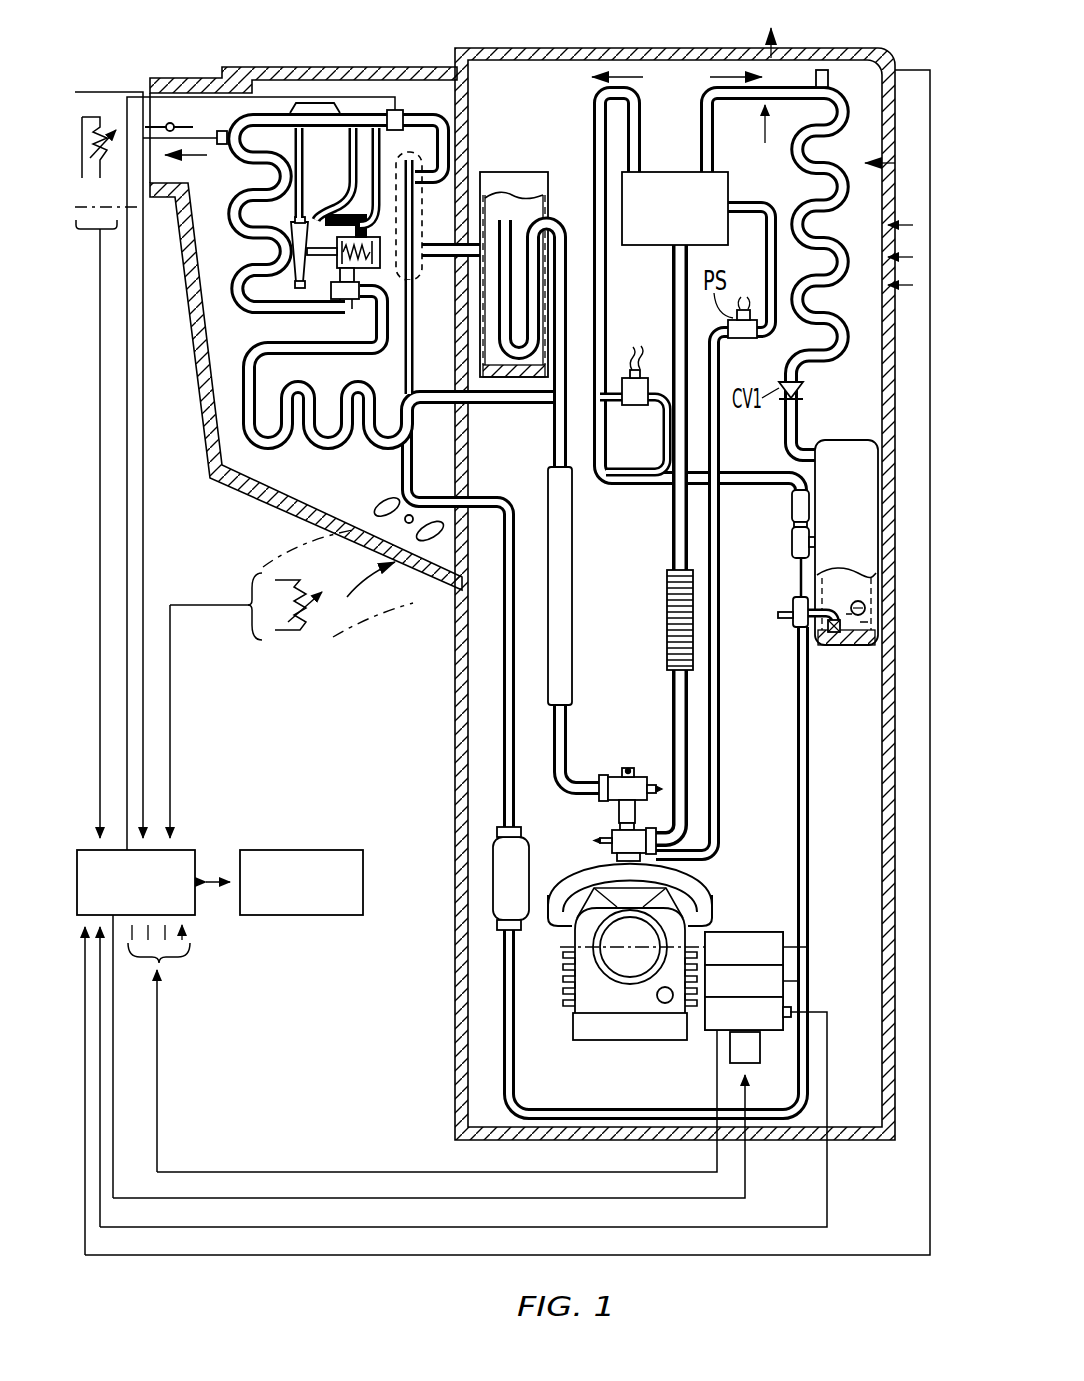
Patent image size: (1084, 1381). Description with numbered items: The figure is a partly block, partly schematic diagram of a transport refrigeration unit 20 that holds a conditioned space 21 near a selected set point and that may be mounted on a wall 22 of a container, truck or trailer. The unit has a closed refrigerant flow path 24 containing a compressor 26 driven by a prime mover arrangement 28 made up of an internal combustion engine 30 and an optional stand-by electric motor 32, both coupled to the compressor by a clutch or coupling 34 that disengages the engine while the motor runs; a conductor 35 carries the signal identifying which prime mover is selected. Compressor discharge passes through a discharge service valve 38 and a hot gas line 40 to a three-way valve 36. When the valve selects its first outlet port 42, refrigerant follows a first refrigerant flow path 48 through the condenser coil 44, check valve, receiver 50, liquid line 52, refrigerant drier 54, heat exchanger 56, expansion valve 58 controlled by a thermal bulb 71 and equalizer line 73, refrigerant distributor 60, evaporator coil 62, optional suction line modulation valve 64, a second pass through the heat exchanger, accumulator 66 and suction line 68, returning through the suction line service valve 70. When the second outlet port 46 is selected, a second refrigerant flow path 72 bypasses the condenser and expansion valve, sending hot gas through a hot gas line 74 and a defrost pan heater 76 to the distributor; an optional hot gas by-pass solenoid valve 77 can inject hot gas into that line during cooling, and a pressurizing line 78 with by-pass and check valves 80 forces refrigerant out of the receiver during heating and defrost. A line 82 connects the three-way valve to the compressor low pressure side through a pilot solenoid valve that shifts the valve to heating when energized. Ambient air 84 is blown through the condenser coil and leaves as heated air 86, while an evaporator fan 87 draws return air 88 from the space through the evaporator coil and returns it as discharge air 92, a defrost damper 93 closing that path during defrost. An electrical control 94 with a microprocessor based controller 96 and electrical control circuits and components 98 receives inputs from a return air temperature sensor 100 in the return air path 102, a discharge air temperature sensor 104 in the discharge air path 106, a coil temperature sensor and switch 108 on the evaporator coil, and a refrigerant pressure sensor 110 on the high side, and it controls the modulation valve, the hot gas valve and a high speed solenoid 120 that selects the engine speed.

The refrigeration unit 20 is at (423, 1291).
The conditioned space 21 is at (264, 543).
The wall 22 is at (470, 130).
The closed fluid refrigerant circuit or flow path 24 is at (660, 545).
The refrigerant compressor 26 is at (565, 985).
The prime mover arrangement 28 is at (776, 961).
The internal combustion engine 30 is at (698, 1022).
The stand-by electric motor 32 is at (786, 947).
The clutch or coupling 34 is at (786, 981).
The conductor 35 is at (791, 1012).
The three-way valve 36 is at (660, 148).
The discharge service valve 38 is at (620, 842).
The hot gas line 40 is at (672, 490).
The first outlet port 42 is at (712, 168).
The condenser coil 44 is at (852, 262).
The second outlet port 46 is at (627, 168).
The first refrigerant flow path 48 is at (725, 104).
The receiver 50 is at (833, 648).
The liquid line 52 is at (810, 760).
The refrigerant drier 54 is at (500, 866).
The heat exchanger 56 is at (420, 278).
The expansion valve 58 is at (320, 298).
The refrigerant distributor 60 is at (413, 347).
The evaporator coil 62 is at (230, 238).
The controllable suction line modulation valve 64 is at (400, 110).
The accumulator 66 is at (503, 172).
The suction line 68 is at (553, 437).
The suction line service valve 70 is at (626, 790).
The thermal bulb 71 is at (327, 102).
The second refrigerant flow path 72 is at (630, 80).
The equalizer line 73 is at (340, 175).
The hot gas line 74 is at (602, 288).
The defrost pan heater 76 is at (323, 447).
The hot gas by-pass solenoid valve 77 is at (643, 378).
The by-pass or pressurizing line 78 is at (657, 470).
The by-pass and check valves 80 is at (792, 542).
The conduit or line 82 is at (720, 563).
The ambient air 84 is at (897, 225).
The heated air 86 is at (766, 34).
The evaporator fan or blower 87 is at (386, 502).
The return air 88 is at (373, 594).
The discharge air 92 is at (203, 156).
The defrost damper 93 is at (170, 122).
The electrical control 94 is at (220, 854).
The microprocessor based controller 96 is at (190, 850).
The electrical control circuits and components 98 is at (322, 850).
The return air temperature sensor 100 is at (305, 632).
The return air path 102 is at (440, 575).
The discharge air temperature sensor 104 is at (100, 117).
The discharge air path 106 is at (75, 95).
The coil temperature sensor and switch 108 is at (218, 130).
The refrigerant pressure sensor (HPCO) 110 is at (824, 70).
The throttle or high speed solenoid 120 is at (761, 1048).